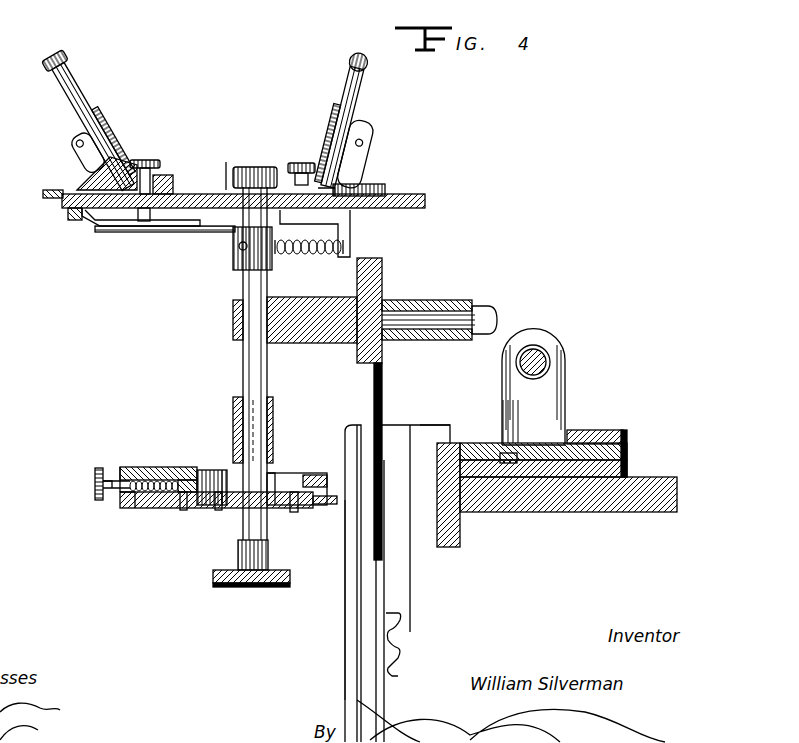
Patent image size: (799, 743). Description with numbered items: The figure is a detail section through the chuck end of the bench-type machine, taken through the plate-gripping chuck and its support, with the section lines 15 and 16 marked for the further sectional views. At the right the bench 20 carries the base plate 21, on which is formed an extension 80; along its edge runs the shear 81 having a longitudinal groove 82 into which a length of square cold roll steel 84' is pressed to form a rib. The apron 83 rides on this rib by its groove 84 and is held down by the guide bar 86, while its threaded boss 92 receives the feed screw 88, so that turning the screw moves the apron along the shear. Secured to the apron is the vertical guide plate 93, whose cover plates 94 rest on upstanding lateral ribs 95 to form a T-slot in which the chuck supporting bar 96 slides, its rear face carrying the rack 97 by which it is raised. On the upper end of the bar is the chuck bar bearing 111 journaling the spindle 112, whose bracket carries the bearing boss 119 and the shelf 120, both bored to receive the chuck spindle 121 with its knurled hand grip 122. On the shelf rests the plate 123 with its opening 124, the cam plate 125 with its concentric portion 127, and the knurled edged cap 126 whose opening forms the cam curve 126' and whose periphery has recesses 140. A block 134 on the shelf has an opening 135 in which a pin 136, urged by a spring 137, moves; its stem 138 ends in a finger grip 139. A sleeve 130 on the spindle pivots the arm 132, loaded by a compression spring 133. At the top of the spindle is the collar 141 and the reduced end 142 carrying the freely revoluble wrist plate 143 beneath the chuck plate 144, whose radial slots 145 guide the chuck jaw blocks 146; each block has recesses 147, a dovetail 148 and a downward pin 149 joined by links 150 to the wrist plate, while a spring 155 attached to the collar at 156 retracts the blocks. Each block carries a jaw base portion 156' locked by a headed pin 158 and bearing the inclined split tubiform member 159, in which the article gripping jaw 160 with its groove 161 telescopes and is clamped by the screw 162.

The section line 15— 15 is at (243, 289).
The section line 16— 16 is at (88, 167).
The bench 20 is at (463, 495).
The base plate 21 is at (616, 498).
The extension 80 is at (545, 512).
The shear 81 is at (628, 466).
The longitudinal groove 82 is at (508, 465).
The apron 83 is at (463, 448).
The groove 84 is at (551, 426).
The square cold roll steel 84' is at (496, 422).
The guide bar 86 is at (628, 432).
The feed screw 88 is at (550, 358).
The threaded boss 92 is at (565, 393).
The vertical guide plate 93 is at (440, 430).
The cover plates 94 is at (348, 436).
The upstanding lateral ribs 95 is at (412, 552).
The chuck supporting bar 96 is at (362, 598).
The rack 97 is at (397, 678).
The chuck bar bearing 111 is at (426, 306).
The spindle 112 is at (465, 316).
The bearing boss 119 is at (233, 334).
The shelf 120 is at (145, 509).
The chuck spindle 121 is at (268, 383).
The hand grip 122 is at (216, 588).
The plate 123 is at (221, 510).
The opening 124 is at (292, 512).
The plate 125 is at (305, 474).
The knurled edged cap 126 is at (212, 472).
The cam curve 126' is at (291, 463).
The concentrically disposed portion 127 is at (222, 470).
The sleeve 130 is at (235, 410).
The arm 132 is at (238, 548).
The compression spring 133 is at (275, 420).
The block 134 is at (128, 467).
The opening 135 is at (165, 480).
The pin 136 is at (183, 511).
The spring 137 is at (125, 509).
The stem 138 is at (107, 490).
The finger grip 139 is at (95, 478).
The recesses 140 is at (187, 480).
The collar 141 is at (272, 265).
The reduced end 142 is at (262, 167).
The plate 143 is at (200, 234).
The chuck plate 144 is at (426, 204).
The radial slots 145 is at (232, 165).
The chuck jaw block 146 is at (48, 200).
The recesses 147 is at (143, 223).
The dovetail 148 is at (335, 192).
The pin 149 is at (72, 221).
The links 150 is at (102, 228).
The spring 155 is at (321, 258).
The spring attachment 156 is at (200, 274).
The base portion 156' is at (260, 176).
The headed pin 158 is at (150, 160).
The split tubiform member 159 is at (108, 117).
The article gripping jaw 160 is at (82, 90).
The groove 161 is at (68, 63).
The clamping screw 162 is at (68, 145).